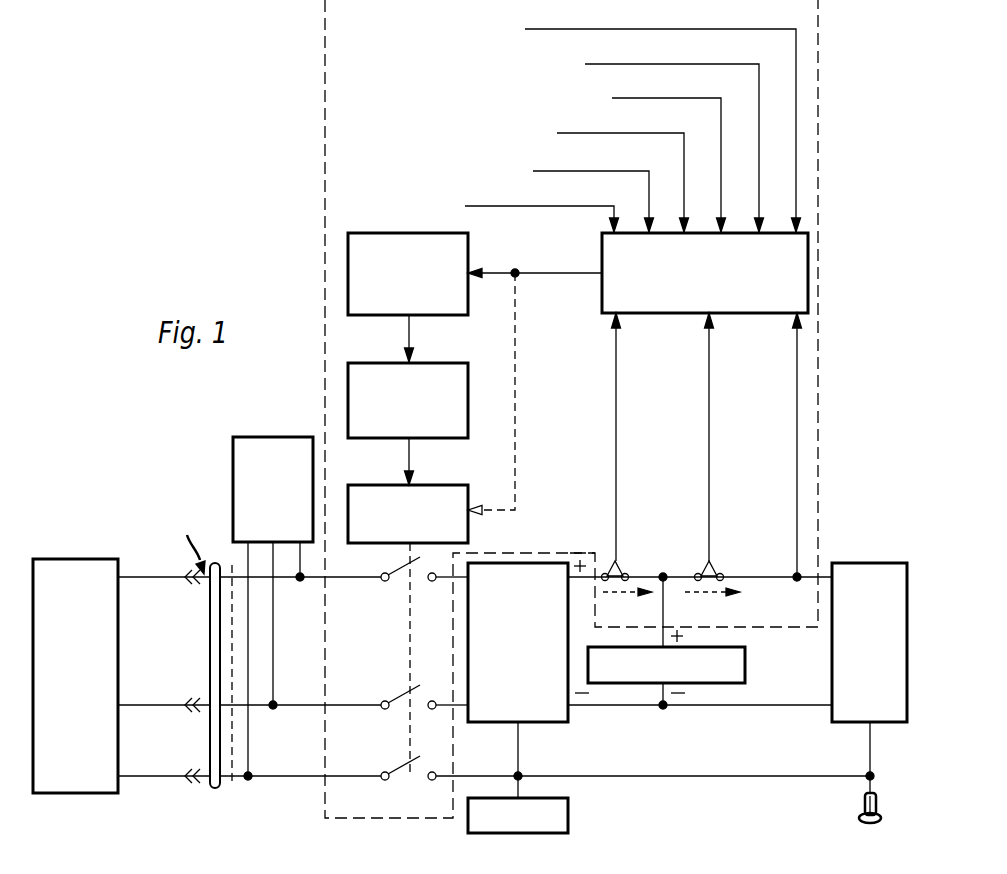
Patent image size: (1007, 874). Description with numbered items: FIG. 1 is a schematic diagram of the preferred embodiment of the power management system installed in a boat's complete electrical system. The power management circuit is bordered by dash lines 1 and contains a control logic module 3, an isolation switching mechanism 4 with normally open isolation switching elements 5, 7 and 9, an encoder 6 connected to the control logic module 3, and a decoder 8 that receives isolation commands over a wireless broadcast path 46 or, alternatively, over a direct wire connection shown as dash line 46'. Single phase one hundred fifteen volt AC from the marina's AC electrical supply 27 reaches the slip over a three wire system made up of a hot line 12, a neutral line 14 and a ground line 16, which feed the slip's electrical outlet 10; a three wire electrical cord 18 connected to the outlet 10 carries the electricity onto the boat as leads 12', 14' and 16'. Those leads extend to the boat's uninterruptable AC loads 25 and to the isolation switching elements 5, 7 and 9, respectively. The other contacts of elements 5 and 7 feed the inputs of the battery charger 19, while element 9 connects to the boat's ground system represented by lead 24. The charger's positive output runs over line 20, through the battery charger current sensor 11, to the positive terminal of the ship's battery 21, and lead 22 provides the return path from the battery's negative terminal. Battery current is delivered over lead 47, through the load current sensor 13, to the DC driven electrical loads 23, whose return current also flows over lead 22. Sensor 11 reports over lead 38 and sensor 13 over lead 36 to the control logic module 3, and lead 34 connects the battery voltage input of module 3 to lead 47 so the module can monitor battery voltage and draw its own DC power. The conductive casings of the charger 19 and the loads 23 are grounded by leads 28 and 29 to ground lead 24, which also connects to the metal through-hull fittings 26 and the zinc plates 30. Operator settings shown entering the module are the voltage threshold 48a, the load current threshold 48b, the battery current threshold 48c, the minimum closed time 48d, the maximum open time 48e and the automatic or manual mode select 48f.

The power management circuit 1 is at (325, 68).
The control logic module 3 is at (602, 248).
The isolation switching mechanism 4 is at (445, 485).
The isolation switching element 5 is at (402, 570).
The encoder 6 is at (468, 248).
The isolation switching element 7 is at (402, 698).
The decoder 8 is at (445, 363).
The isolation switching element 9 is at (402, 768).
The electrical outlet 10 is at (188, 541).
The battery charger current sensor 11 is at (620, 565).
The hot line 12 is at (164, 586).
The hot lead 12' is at (300, 581).
The load current sensor 13 is at (712, 565).
The neutral line 14 is at (164, 705).
The neutral lead 14' is at (300, 638).
The ground line 16 is at (164, 776).
The ground lead 16' is at (300, 674).
The electrical cord 18 is at (215, 563).
The battery charger 19 is at (503, 722).
The line 20 is at (606, 574).
The battery 21 is at (745, 668).
The lead 22 is at (603, 706).
The DC driven electrical loads 23 is at (859, 563).
The ground lead 24 is at (738, 776).
The AC loads 25 is at (276, 437).
The through-hull fittings 26 is at (865, 803).
The marina AC electrical supply 27 is at (78, 559).
The lead 28 is at (539, 760).
The lead 29 is at (870, 757).
The zinc plates 30 is at (568, 812).
The lead 34 is at (797, 426).
The lead 36 is at (709, 410).
The lead 38 is at (616, 410).
The wireless broadcast path 46 is at (483, 316).
The direct wire connection 46' is at (517, 394).
The lead 47 is at (758, 577).
The voltage threshold input 48a is at (648, 29).
The load current threshold input 48b is at (648, 64).
The battery current threshold input 48c is at (674, 98).
The minimum closed time input 48d is at (654, 133).
The maximum open time input 48e is at (651, 171).
The mode select input 48f is at (621, 206).